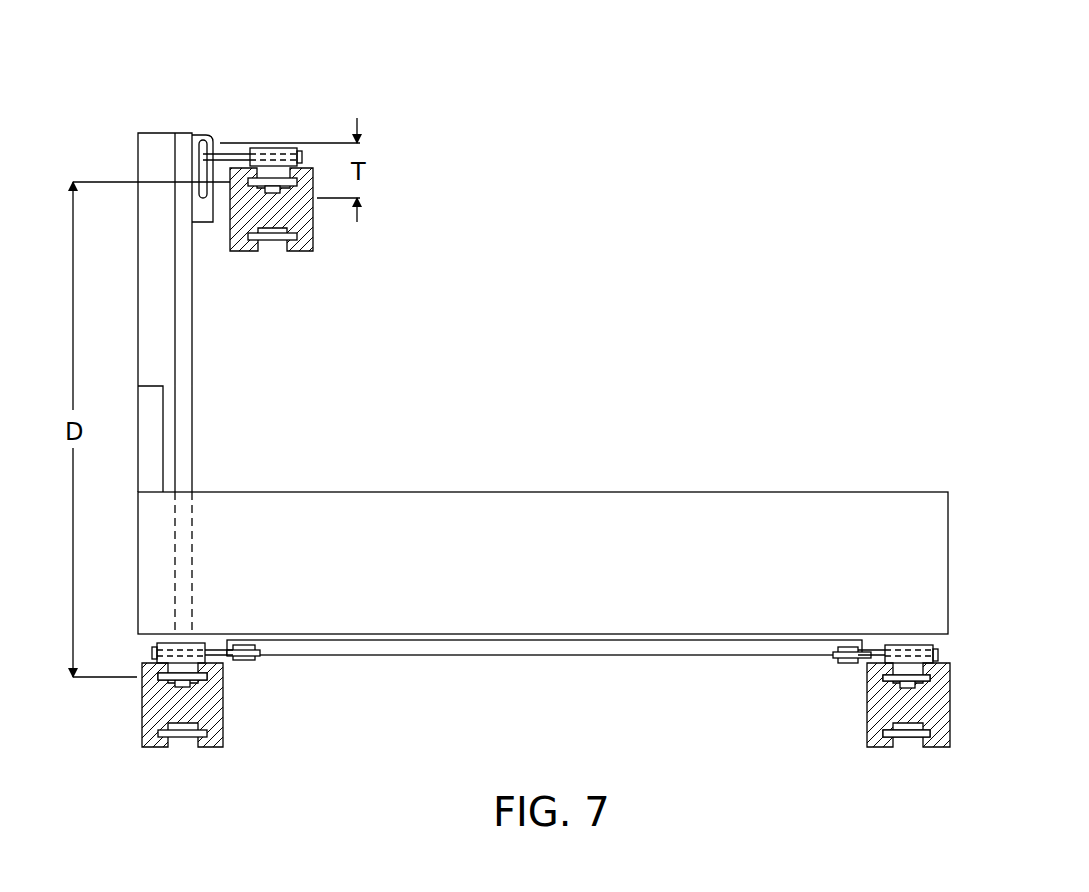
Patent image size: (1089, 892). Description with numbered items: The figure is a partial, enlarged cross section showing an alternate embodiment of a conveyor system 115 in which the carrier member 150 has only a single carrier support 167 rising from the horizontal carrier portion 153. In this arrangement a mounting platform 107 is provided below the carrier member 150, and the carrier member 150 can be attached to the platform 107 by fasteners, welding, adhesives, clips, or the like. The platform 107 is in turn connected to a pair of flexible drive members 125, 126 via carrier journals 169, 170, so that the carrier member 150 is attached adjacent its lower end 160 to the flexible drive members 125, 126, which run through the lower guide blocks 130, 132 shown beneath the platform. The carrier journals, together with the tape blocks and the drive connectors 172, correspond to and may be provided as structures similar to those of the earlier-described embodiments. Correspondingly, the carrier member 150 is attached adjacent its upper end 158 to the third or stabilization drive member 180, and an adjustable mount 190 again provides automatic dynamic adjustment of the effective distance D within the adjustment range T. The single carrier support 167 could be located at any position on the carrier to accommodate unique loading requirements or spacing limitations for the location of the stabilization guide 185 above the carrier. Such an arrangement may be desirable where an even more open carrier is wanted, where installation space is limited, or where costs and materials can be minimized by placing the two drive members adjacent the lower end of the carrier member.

The mounting platform 107 is at (568, 658).
The conveyor system 115 is at (583, 245).
The flexible drive member 125 is at (912, 682).
The flexible drive member 126 is at (168, 680).
The support block 130 is at (867, 722).
The support block 132 is at (220, 703).
The carrier member 150 is at (552, 378).
The base plate 153 is at (542, 579).
The upper end 158 is at (243, 359).
The lower end 160 is at (965, 545).
The carrier support 167 is at (193, 328).
The carrier journal 169 is at (866, 652).
The carrier journal 170 is at (222, 650).
The drive connector 172 is at (892, 668).
The stabilization drive member 180 is at (265, 178).
The stabilization guide 185 is at (313, 226).
The adjustable mount 190 is at (217, 120).